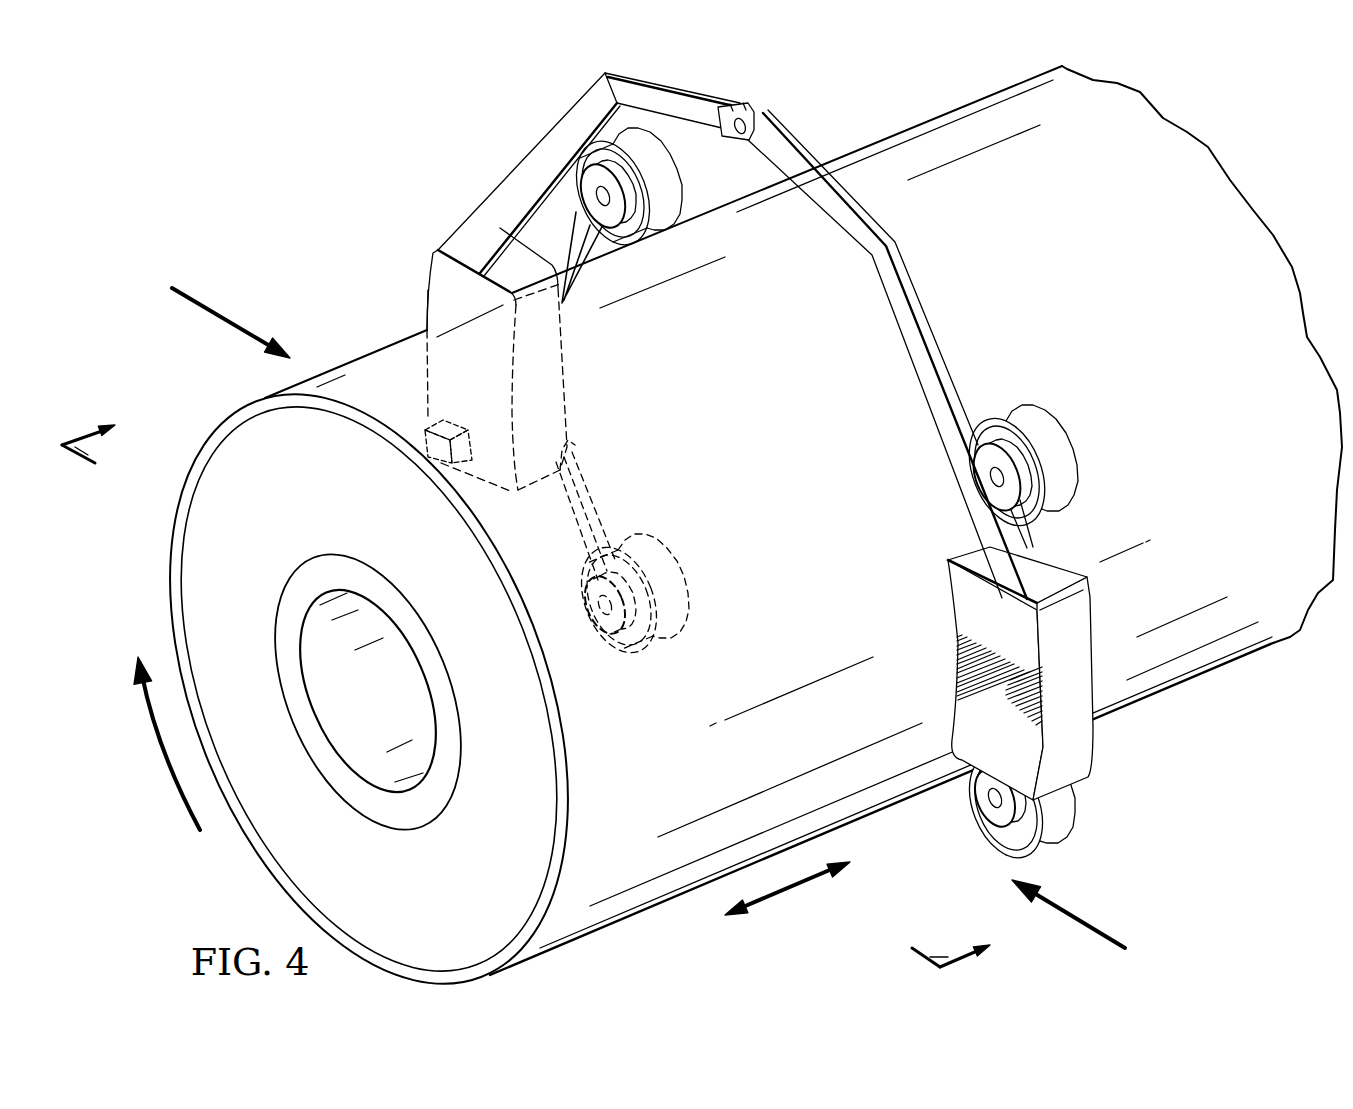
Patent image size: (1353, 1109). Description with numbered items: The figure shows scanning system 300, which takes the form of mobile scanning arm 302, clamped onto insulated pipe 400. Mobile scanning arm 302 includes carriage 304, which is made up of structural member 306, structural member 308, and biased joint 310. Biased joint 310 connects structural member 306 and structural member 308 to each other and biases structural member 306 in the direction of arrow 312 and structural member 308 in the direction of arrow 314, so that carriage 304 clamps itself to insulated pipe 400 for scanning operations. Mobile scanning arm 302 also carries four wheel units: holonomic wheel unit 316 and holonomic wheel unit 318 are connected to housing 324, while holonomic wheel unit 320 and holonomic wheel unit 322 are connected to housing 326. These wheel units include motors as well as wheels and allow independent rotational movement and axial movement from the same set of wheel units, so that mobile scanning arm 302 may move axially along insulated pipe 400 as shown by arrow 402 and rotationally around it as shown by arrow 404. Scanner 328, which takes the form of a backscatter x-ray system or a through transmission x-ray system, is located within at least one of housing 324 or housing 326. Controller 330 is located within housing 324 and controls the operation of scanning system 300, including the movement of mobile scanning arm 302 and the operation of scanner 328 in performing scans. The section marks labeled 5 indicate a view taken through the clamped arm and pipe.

The scanning system 300 is at (411, 128).
The mobile scanning arm 302 is at (732, 331).
The carriage 304 is at (496, 222).
The structural member 306 is at (538, 174).
The structural member 308 is at (891, 292).
The biased joint 310 is at (757, 104).
The arrow 312 is at (213, 316).
The arrow 314 is at (1084, 922).
The holonomic wheel unit 316 is at (690, 196).
The holonomic wheel unit 318 is at (662, 648).
The holonomic wheel unit 320 is at (1007, 840).
The holonomic wheel unit 322 is at (1009, 402).
The housing 324 is at (437, 258).
The housing 326 is at (1082, 748).
The scanner 328 is at (412, 311).
The controller 330 is at (453, 420).
The insulated pipe 400 is at (1226, 664).
The arrow 402 is at (789, 888).
The arrow 404 is at (161, 749).
The section line 5 is at (537, 686).